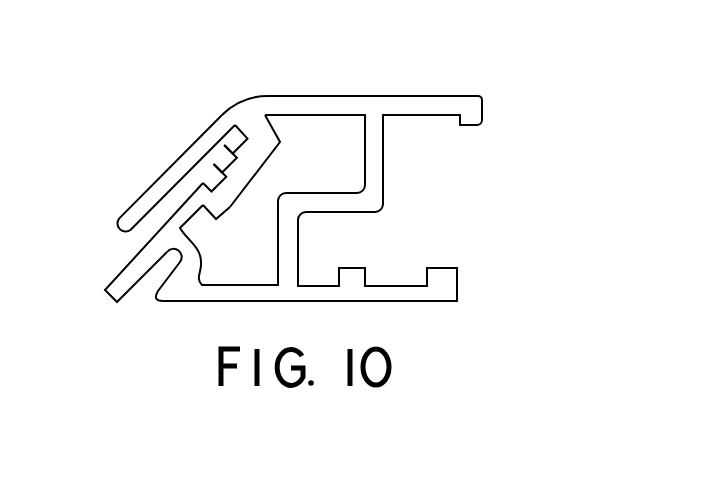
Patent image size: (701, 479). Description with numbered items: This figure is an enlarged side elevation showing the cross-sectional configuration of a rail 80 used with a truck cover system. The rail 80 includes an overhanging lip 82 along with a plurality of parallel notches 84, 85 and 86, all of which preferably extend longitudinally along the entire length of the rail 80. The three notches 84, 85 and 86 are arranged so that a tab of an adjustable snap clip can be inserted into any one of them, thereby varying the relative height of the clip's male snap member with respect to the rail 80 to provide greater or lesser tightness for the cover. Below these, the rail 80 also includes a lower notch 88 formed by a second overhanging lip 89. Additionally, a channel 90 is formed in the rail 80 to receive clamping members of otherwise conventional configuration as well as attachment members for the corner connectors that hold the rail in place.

The rail 80 is at (169, 69).
The overhanging lip 82 is at (157, 196).
The notch 84 is at (230, 209).
The notch 85 is at (258, 178).
The notch 86 is at (262, 141).
The lower notch 88 is at (153, 281).
The overhanging lip 89 is at (109, 288).
The channel 90 is at (423, 203).